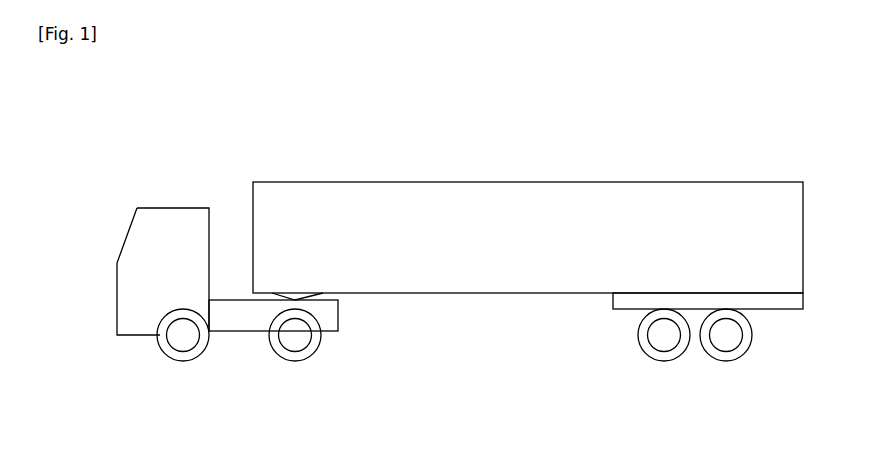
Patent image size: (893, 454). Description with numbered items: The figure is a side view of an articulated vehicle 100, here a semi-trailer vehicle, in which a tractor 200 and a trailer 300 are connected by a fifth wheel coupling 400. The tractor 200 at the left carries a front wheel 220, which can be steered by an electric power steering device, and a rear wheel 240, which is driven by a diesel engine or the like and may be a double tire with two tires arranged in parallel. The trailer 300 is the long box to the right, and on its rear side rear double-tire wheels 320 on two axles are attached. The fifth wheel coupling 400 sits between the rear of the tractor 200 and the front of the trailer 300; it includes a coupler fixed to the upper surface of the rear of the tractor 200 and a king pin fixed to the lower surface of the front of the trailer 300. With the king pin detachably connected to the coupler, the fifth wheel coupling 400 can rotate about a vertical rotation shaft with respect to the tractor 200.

The articulated vehicle 100 is at (498, 167).
The tractor 200 is at (177, 200).
The front wheel 220 is at (182, 362).
The rear wheel 240 is at (297, 362).
The trailer 300 is at (655, 175).
The rear double-tire wheels 320 is at (662, 362).
The fifth wheel coupling 400 is at (295, 292).